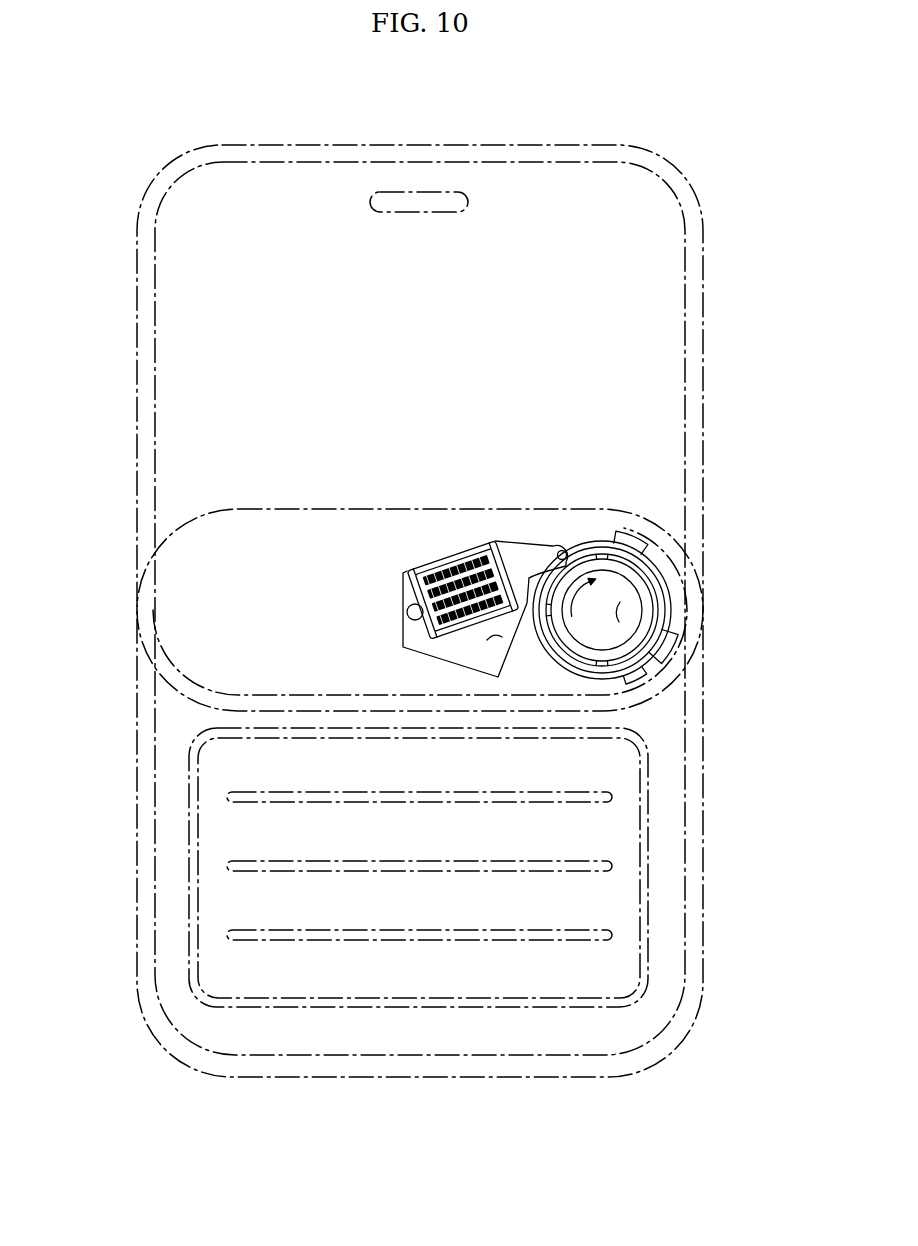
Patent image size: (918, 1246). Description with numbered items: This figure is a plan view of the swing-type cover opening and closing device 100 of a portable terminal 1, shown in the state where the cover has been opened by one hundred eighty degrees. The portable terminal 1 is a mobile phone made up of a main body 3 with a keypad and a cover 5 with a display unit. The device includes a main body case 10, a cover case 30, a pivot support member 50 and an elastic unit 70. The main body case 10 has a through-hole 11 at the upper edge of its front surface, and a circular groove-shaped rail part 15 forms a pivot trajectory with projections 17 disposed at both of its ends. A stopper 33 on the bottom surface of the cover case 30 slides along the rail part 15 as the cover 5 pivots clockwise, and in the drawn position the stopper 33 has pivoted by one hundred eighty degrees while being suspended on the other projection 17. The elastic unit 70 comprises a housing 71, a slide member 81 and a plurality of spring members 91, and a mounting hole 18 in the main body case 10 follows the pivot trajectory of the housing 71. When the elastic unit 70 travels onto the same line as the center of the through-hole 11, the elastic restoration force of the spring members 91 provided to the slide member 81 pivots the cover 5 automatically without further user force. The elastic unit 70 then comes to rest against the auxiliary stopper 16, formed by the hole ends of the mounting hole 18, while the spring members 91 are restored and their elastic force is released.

The swing-type cover opening and closing device 100 is at (404, 108).
The portable terminal 1 is at (64, 582).
The cover 5 is at (135, 510).
The main body 3 is at (135, 738).
The cover case 30 is at (703, 352).
The main body case 10 is at (703, 815).
The rail part 15 is at (663, 573).
The pivot support member 50 is at (647, 602).
The through-hole 11 is at (618, 612).
The stopper 33 is at (662, 653).
The projections 17 is at (643, 672).
The slide member 81 is at (528, 565).
The spring members 91 is at (437, 583).
The auxiliary stopper 16 is at (458, 558).
The elastic unit 70 is at (458, 641).
The housing 71 is at (442, 645).
The mounting hole 18 is at (502, 637).